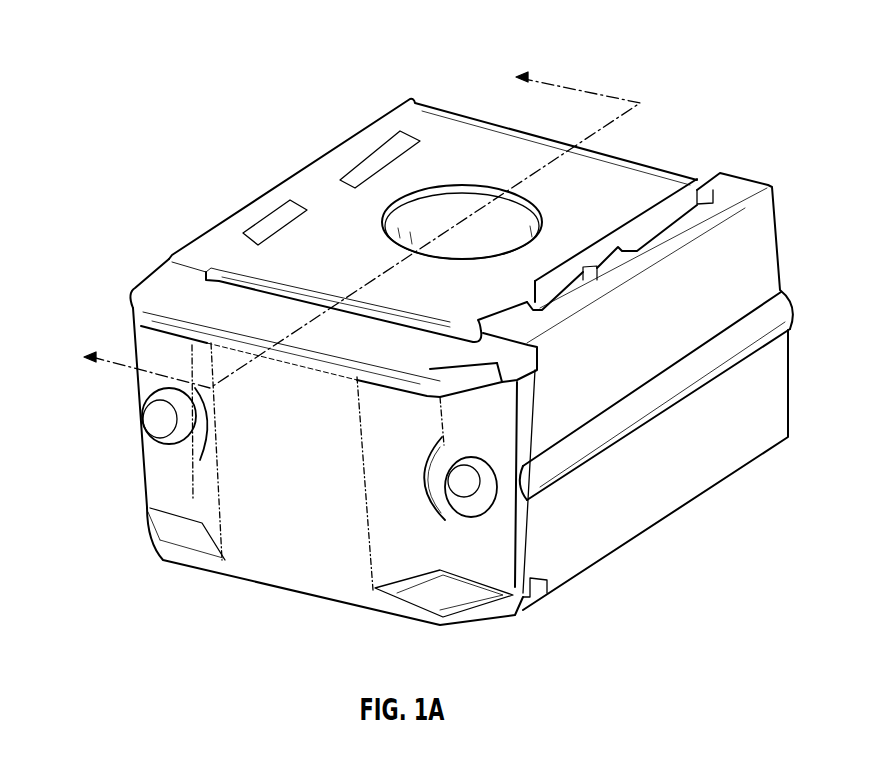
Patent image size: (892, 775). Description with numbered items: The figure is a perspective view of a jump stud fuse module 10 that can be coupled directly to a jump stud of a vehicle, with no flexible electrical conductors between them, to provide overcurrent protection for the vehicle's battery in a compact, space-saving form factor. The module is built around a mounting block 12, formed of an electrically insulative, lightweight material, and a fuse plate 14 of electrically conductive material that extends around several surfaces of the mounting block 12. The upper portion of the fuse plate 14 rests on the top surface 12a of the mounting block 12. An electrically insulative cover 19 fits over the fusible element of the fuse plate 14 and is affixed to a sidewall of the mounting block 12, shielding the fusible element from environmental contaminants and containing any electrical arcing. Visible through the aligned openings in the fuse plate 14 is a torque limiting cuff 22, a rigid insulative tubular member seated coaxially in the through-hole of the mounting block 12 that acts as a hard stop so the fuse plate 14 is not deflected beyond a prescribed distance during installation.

The jump stud fuse module 10 is at (270, 107).
The mounting block 12 is at (618, 517).
The top surface 12a is at (736, 188).
The fuse plate 14 is at (310, 227).
The cover 19 is at (288, 553).
The torque limiting cuff 22 is at (430, 213).